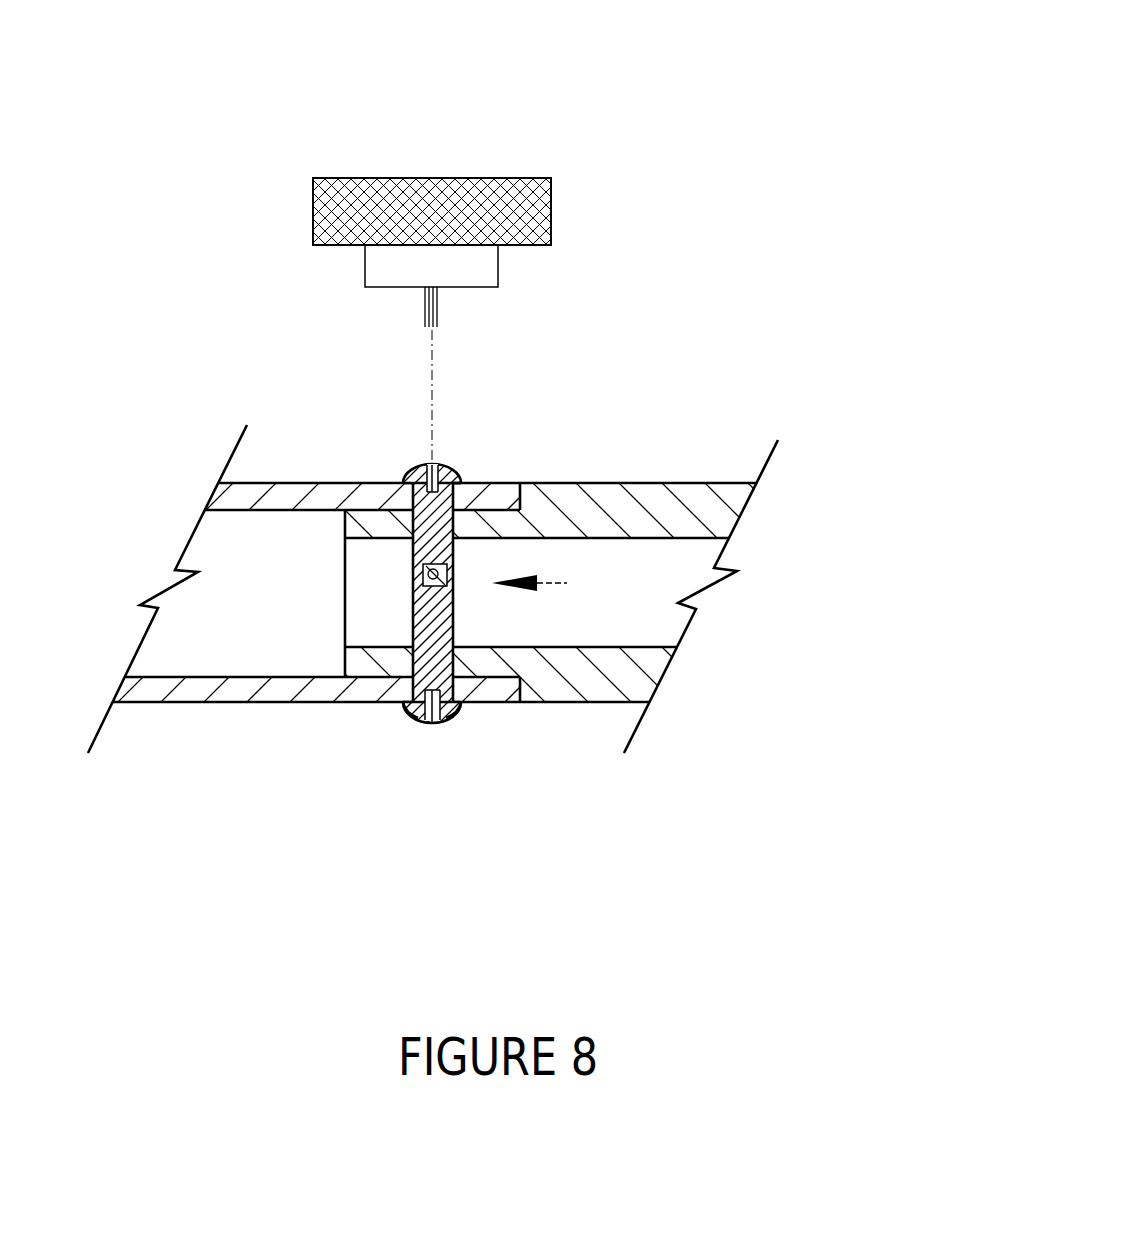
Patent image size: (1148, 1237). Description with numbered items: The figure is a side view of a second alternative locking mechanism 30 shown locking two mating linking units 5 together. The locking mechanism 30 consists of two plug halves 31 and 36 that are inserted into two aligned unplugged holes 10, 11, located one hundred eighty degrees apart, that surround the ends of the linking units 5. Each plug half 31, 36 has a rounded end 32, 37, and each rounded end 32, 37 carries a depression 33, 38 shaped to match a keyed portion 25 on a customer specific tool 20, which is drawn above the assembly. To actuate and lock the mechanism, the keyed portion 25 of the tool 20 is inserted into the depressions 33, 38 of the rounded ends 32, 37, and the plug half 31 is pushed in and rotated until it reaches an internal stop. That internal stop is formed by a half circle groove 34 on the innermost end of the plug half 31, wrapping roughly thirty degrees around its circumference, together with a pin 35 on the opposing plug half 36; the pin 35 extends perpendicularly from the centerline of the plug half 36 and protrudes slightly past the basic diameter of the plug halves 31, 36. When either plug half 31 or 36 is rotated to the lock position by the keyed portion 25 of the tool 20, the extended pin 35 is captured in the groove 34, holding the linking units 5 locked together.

The linking unit 5 is at (687, 482).
The unplugged hole 10 is at (403, 468).
The unplugged hole 11 is at (403, 704).
The customer specific tool 20 is at (573, 162).
The keyed portion 25 is at (437, 303).
The locking mechanism 30 is at (575, 585).
The plug half 31 is at (463, 481).
The rounded end 32 is at (417, 465).
The depression 33 is at (440, 465).
The half circle groove 34 is at (453, 567).
The pin 35 is at (455, 575).
The plug half 36 is at (442, 723).
The rounded end 37 is at (408, 716).
The depression 38 is at (432, 723).